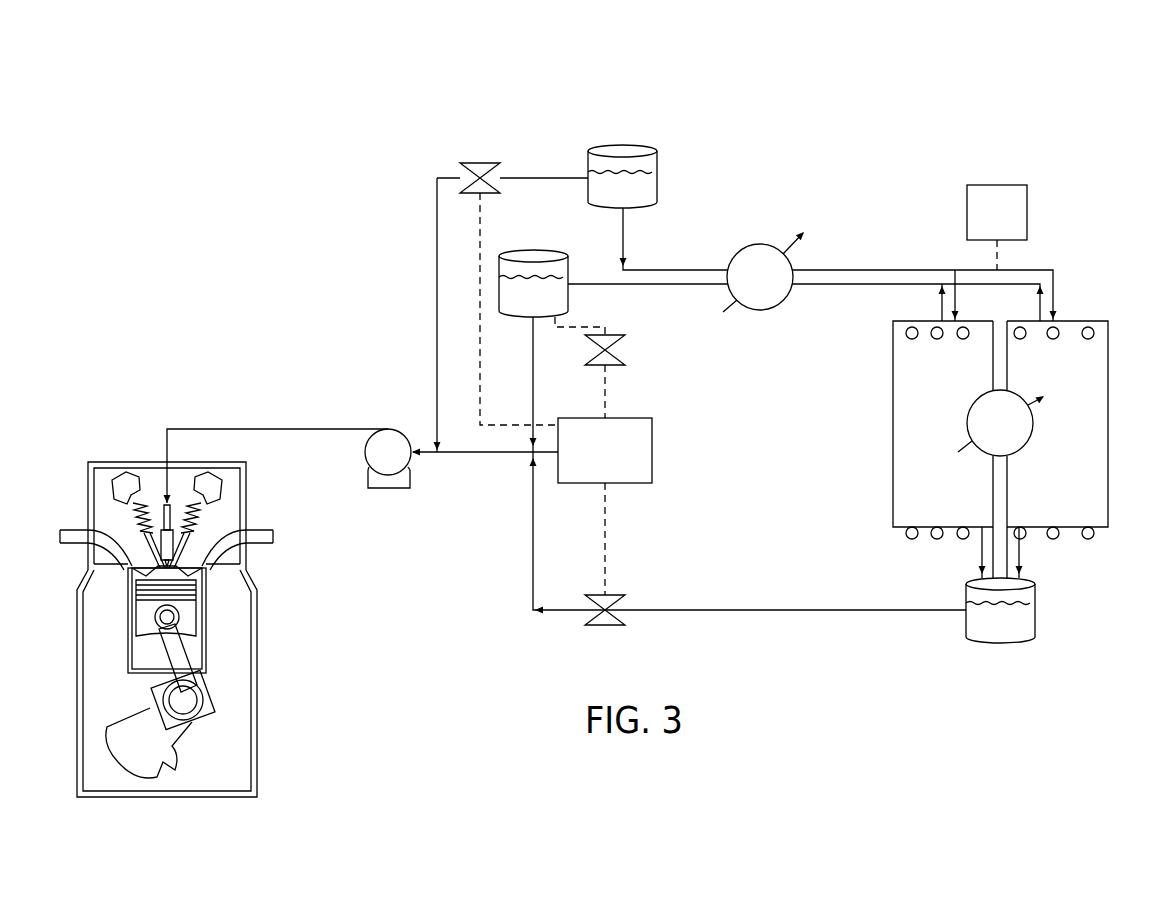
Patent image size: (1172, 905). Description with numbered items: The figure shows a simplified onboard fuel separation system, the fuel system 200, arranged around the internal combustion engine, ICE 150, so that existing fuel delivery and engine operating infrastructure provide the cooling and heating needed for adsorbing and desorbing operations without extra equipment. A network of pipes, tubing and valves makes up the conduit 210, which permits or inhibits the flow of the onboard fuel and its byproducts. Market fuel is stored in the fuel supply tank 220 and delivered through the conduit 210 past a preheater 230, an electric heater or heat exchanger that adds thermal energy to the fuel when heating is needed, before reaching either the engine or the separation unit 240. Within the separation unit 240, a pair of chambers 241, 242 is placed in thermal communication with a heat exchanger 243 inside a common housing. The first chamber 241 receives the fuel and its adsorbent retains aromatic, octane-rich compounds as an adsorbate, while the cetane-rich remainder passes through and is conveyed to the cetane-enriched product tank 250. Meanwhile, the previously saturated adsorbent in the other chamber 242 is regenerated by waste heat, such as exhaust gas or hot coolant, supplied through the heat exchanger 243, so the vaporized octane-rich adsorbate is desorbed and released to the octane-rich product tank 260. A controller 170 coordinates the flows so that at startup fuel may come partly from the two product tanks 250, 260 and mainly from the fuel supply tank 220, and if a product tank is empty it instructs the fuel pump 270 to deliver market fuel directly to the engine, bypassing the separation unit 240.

The ICE 150 is at (258, 633).
The controller 170 is at (587, 463).
The fuel system 200 is at (1002, 66).
The conduit 210 is at (347, 428).
The fuel supply tank 220 is at (603, 200).
The preheater 230 is at (757, 244).
The separation unit 240 is at (1023, 378).
The first chamber 241 is at (913, 379).
The second chamber 242 is at (1048, 379).
The heat exchanger 243 is at (981, 434).
The cetane-enriched product tank 250 is at (981, 634).
The octane-rich product tank 260 is at (514, 306).
The fuel pump 270 is at (388, 488).